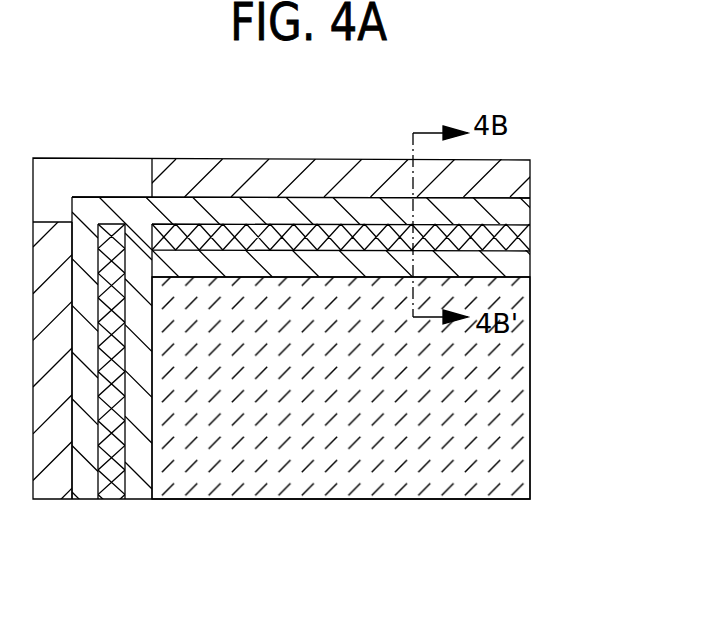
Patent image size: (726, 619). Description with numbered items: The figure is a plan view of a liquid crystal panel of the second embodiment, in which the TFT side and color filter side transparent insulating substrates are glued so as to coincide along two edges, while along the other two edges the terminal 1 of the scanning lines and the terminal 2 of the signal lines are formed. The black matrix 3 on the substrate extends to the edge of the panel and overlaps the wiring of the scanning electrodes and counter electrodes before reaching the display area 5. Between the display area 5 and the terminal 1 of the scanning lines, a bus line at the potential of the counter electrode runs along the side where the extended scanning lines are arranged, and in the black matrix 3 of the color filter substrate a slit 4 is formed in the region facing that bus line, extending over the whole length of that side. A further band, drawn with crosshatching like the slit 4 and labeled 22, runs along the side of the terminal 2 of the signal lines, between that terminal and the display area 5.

The terminal of the scanning lines 1 is at (53, 478).
The terminal of the signal lines 2 is at (308, 175).
The black matrix 3 is at (113, 196).
The slit 4 is at (110, 488).
The horizontal crosshatched layer 22 is at (508, 238).
The display area 5 is at (507, 393).